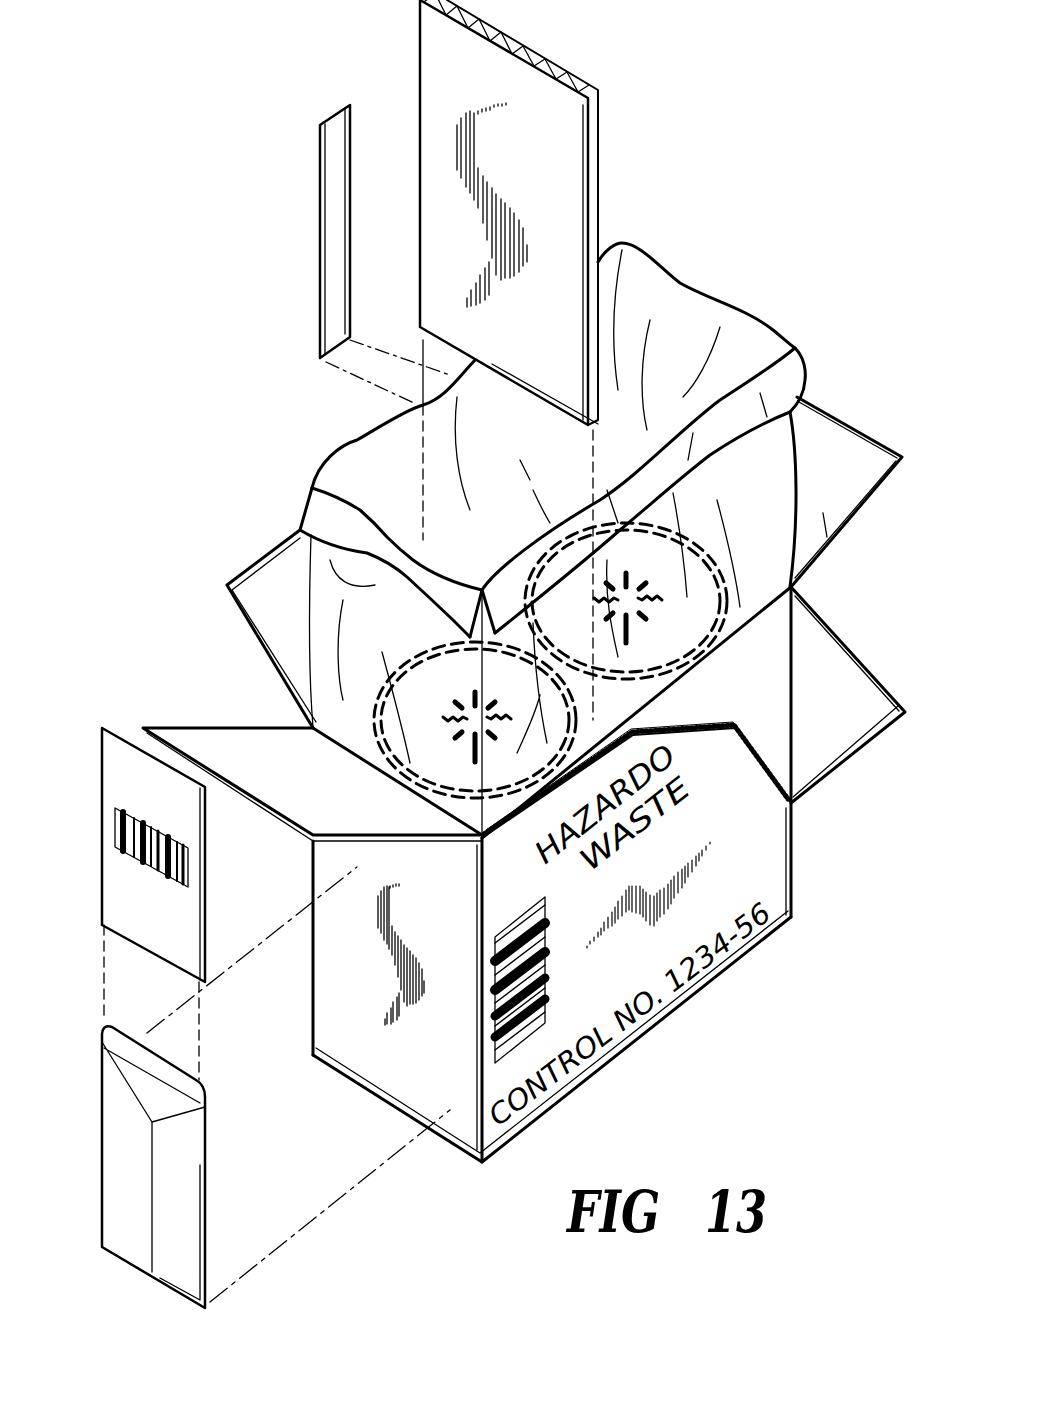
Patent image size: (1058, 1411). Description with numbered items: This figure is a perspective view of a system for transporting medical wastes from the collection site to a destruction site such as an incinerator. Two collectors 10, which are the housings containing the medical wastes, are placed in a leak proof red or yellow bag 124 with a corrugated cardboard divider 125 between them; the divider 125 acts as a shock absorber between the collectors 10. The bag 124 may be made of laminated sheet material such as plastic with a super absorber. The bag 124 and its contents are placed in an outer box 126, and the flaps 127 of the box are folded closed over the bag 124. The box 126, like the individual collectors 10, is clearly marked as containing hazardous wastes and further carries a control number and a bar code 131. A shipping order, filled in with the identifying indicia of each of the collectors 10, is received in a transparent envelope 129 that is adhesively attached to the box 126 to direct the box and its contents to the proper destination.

The collector 10 is at (700, 482).
The bag 124 is at (330, 582).
The corrugated cardboard divider 125 is at (567, 157).
The outer box 126 is at (330, 240).
The flaps 127 is at (811, 641).
The transparent envelope 129 is at (112, 780).
The bar code 131 is at (115, 822).